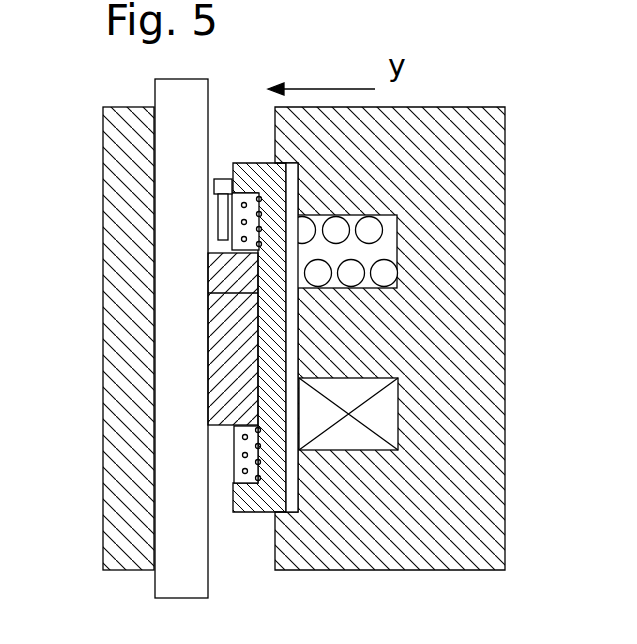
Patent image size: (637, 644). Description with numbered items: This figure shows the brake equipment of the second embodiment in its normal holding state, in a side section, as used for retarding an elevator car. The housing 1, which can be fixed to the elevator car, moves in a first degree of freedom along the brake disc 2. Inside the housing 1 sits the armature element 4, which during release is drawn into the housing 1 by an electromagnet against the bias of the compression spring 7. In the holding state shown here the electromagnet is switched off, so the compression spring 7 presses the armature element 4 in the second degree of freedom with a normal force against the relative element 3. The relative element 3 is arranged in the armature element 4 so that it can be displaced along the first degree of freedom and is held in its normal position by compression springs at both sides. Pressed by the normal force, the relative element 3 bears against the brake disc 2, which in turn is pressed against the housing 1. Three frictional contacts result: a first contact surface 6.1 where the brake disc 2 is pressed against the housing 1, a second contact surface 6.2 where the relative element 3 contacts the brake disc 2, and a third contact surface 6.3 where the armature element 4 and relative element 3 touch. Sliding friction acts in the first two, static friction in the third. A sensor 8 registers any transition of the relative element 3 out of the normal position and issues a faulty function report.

The housing 1 is at (447, 173).
The brake disc 2 is at (170, 148).
The relative element 3 is at (233, 350).
The armature element 4 is at (263, 505).
The first contact surface 6.1 is at (153, 490).
The second contact surface 6.2 is at (208, 403).
The third contact surface 6.3 is at (208, 294).
The compression spring 7 is at (388, 272).
The sensor 8 is at (222, 182).